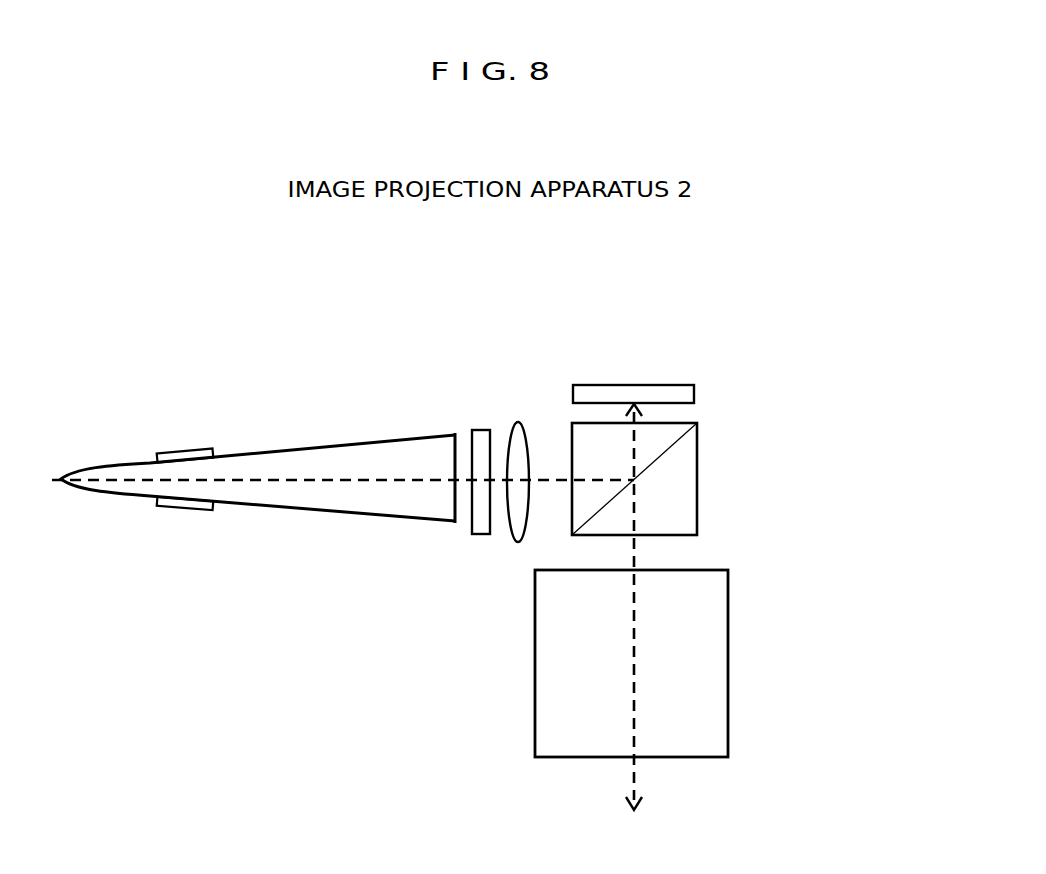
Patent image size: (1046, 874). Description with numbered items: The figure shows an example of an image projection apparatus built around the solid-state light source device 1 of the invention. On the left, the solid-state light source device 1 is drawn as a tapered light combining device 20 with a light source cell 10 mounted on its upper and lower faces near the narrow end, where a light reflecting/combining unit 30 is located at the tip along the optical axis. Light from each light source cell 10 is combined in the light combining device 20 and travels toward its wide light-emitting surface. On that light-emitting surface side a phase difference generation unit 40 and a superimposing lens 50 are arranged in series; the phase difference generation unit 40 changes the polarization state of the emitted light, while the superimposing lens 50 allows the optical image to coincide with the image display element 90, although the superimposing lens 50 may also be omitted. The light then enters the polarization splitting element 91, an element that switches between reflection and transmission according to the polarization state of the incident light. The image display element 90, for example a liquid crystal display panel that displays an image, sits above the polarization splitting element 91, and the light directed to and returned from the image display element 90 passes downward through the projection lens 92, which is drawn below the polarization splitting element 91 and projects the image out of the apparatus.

The solid-state light source device 1 is at (85, 353).
The light source cell 10 is at (183, 460).
The light combining device 20 is at (297, 498).
The light reflecting/combining unit 30 is at (118, 480).
The phase difference generation unit 40 is at (484, 438).
The superimposing lens 50 is at (521, 530).
The image display element 90 is at (630, 391).
The polarization splitting element 91 is at (677, 503).
The projection lens 92 is at (713, 693).